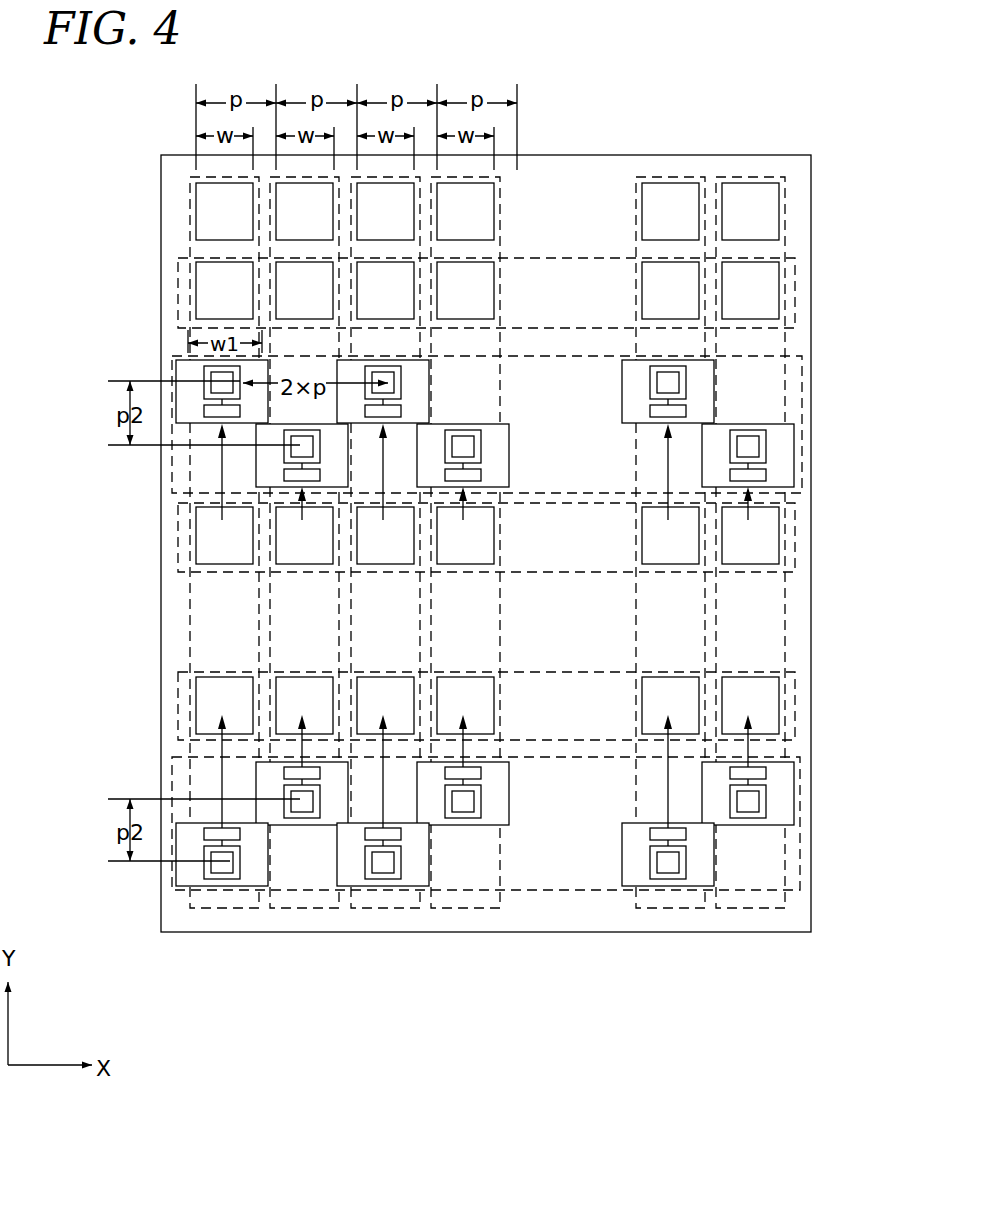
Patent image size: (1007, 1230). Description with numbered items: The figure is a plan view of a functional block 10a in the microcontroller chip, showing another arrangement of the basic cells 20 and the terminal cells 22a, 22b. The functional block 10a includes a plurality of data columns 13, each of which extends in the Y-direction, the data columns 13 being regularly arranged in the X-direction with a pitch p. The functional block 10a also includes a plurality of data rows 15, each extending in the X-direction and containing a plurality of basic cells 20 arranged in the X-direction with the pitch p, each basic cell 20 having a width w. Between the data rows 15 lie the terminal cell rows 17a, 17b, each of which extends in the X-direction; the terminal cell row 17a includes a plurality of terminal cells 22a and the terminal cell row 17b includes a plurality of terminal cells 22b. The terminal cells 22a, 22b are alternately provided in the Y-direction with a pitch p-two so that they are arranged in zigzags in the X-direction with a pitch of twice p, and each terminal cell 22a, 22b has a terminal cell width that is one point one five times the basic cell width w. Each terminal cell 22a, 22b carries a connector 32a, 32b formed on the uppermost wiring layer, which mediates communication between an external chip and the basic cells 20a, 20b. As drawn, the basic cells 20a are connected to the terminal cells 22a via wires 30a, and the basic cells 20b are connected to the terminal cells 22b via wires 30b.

The functional block 10a is at (811, 248).
The data column 13 is at (502, 205).
The data row 15 is at (588, 260).
The basic cell 20 is at (490, 225).
The terminal cell row 17a is at (590, 355).
The terminal cell row 17b is at (560, 893).
The terminal cell 22a is at (507, 427).
The terminal cell 22b is at (467, 826).
The connector 32a is at (462, 440).
The connector 32b is at (457, 810).
The wire 30a is at (465, 520).
The wire 30b is at (463, 750).
The basic cell 20a is at (493, 550).
The basic cell 20b is at (493, 718).